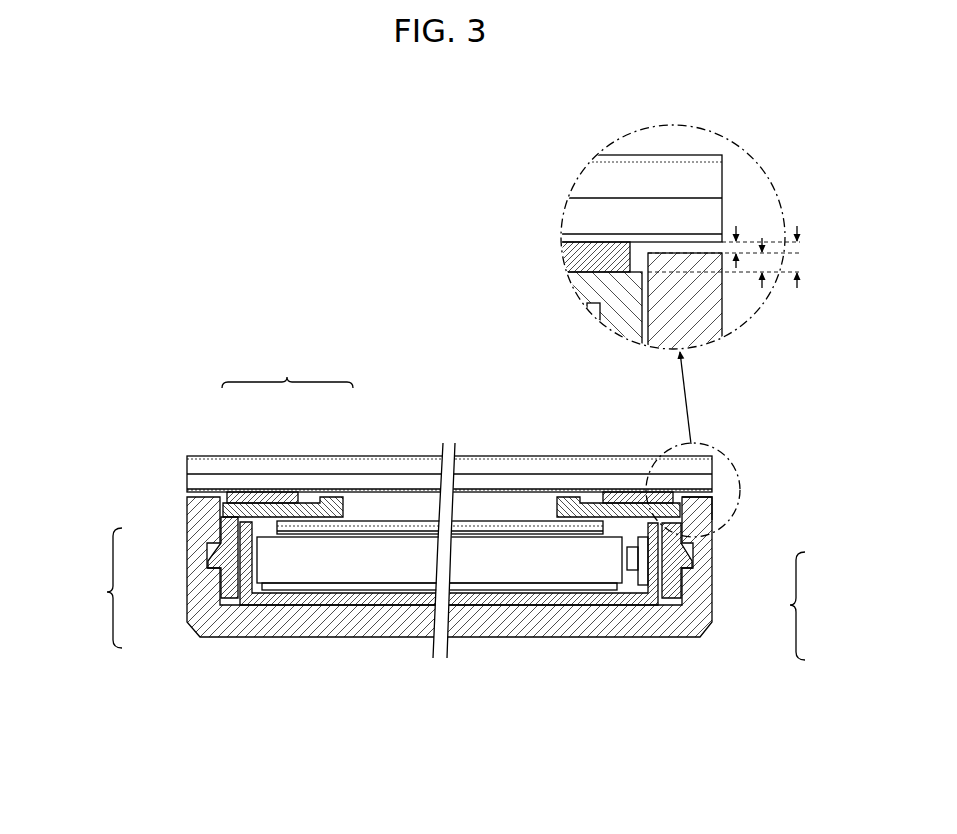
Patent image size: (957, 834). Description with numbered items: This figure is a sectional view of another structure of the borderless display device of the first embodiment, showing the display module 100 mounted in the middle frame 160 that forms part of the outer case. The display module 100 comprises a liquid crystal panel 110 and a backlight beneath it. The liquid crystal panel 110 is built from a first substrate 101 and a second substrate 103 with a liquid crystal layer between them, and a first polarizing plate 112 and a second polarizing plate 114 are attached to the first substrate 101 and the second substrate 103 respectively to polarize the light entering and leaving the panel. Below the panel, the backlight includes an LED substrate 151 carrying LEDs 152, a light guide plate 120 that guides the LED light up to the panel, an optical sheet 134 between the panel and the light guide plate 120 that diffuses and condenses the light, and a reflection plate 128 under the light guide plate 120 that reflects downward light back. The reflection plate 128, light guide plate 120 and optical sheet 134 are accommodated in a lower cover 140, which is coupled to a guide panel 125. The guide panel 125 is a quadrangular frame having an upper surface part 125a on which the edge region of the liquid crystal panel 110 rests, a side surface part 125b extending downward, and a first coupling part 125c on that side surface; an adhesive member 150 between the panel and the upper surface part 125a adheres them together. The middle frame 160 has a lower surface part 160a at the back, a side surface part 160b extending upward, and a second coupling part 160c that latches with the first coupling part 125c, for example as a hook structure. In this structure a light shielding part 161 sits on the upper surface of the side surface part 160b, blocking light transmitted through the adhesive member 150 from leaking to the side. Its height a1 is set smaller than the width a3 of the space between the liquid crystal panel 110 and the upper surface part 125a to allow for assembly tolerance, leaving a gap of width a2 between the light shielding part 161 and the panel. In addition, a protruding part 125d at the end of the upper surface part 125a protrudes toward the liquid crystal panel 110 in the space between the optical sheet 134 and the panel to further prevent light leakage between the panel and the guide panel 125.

The display module 100 is at (557, 453).
The liquid crystal panel 110 is at (449, 423).
The first polarizing plate 112 is at (226, 493).
The first substrate 101 is at (268, 480).
The second substrate 103 is at (314, 472).
The second polarizing plate 114 is at (345, 457).
The light guide plate 120 is at (277, 566).
The guide panel 125 is at (385, 582).
The upper surface part 125a is at (232, 517).
The side surface part 125b is at (228, 586).
The first coupling part 125c is at (209, 562).
The protruding part 125d is at (225, 602).
The reflection plate 128 is at (397, 598).
The optical sheet 134 is at (511, 537).
The lower cover 140 is at (327, 590).
The adhesive member 150 is at (228, 505).
The LED substrate 151 is at (642, 573).
The LED 152 is at (631, 558).
The middle frame 160 is at (513, 578).
The lower surface part 160a is at (658, 614).
The side surface part 160b is at (700, 590).
The second coupling part 160c is at (694, 557).
The light shielding part 161 is at (713, 499).
The height of the light shielding part a1 is at (771, 263).
The width of the space between the light shielding part and the liquid crystal panel a2 is at (745, 247).
The width of the space between the liquid crystal panel and the upper surface part a3 is at (806, 257).